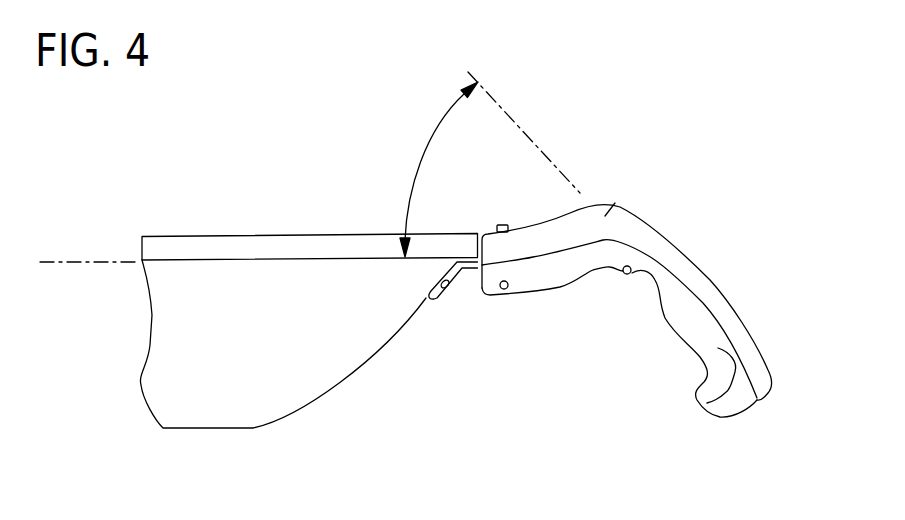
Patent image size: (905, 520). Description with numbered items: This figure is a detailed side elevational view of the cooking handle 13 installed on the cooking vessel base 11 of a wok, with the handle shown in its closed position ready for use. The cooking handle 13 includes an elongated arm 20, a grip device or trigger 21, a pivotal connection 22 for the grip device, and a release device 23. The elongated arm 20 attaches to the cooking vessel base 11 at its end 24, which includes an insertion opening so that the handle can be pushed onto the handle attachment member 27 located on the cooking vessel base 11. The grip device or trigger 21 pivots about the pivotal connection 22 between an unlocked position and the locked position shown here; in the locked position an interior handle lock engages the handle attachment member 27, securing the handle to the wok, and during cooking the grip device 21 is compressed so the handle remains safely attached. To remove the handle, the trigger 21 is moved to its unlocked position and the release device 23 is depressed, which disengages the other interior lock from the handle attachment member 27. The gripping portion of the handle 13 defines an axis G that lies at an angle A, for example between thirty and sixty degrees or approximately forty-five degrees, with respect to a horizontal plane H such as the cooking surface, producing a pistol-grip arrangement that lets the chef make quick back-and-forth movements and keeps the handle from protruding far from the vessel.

The cooking vessel base 11 is at (277, 362).
The cooking handle 13 is at (615, 197).
The elongated arm 20 is at (680, 265).
The grip device or trigger 21 is at (680, 323).
The pivotal connection 22 is at (622, 270).
The release device 23 is at (503, 225).
The end 24 is at (480, 273).
The handle attachment member 27 is at (435, 283).
The angle A is at (439, 169).
The axis G is at (528, 132).
The horizontal plane H is at (48, 262).